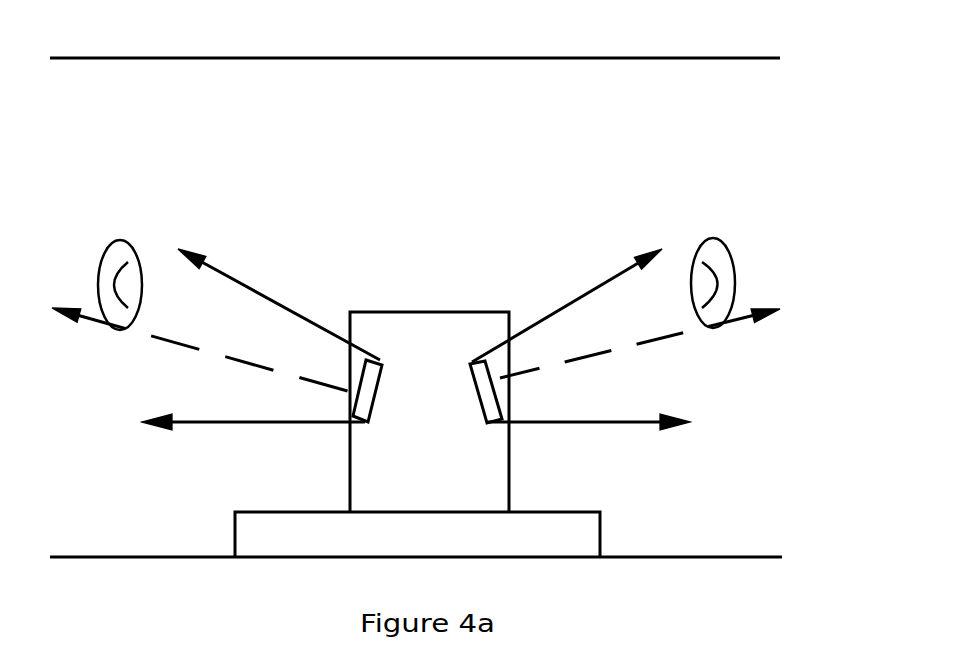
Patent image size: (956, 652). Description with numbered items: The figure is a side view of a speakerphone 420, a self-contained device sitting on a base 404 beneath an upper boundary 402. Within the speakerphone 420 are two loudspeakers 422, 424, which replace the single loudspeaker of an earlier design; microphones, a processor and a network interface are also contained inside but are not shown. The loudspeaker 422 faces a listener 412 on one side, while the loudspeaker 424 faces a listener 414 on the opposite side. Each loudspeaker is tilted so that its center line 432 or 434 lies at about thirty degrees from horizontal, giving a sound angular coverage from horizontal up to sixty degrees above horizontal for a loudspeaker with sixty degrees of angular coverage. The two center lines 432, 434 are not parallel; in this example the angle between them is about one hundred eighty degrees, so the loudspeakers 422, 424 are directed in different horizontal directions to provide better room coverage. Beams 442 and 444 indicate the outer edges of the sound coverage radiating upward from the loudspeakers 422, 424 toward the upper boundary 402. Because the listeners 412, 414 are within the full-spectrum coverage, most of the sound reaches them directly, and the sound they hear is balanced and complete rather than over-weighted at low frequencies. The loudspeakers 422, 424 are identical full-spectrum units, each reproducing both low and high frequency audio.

The top boundary / cover plate 402 is at (97, 56).
The substrate / base 404 is at (78, 555).
The listener 412 is at (142, 255).
The listener 414 is at (735, 273).
The speakerphone 420 is at (400, 312).
The loudspeaker 422 is at (353, 427).
The loudspeaker 424 is at (490, 425).
The center line 432 is at (73, 315).
The center line 434 is at (735, 322).
The left emitted beam 442 is at (243, 280).
The right emitted beam 444 is at (547, 420).